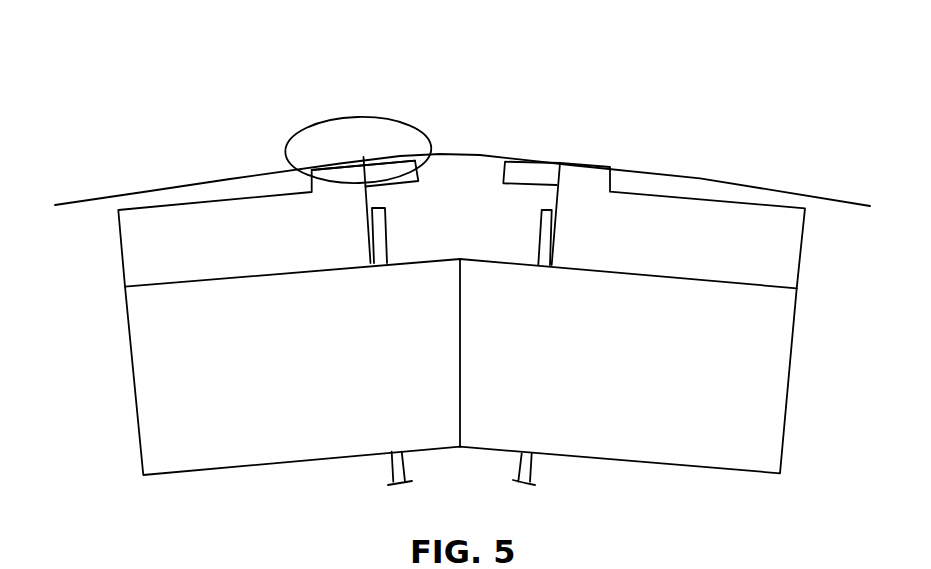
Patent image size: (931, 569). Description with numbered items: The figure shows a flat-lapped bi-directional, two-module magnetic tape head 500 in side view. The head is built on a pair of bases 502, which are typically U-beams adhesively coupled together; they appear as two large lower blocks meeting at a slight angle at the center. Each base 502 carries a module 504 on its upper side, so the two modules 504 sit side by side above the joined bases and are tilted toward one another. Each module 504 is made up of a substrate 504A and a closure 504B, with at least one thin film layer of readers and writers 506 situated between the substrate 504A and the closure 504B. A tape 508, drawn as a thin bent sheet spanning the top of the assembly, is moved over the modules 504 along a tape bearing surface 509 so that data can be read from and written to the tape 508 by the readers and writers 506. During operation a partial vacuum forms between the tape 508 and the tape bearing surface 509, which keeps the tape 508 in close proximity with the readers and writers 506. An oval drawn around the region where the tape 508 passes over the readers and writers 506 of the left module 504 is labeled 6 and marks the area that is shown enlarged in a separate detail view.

The magnetic tape head 500 is at (225, 119).
The base 502 is at (131, 358).
The module 504 is at (122, 255).
The substrate 504A is at (185, 230).
The closure 504B is at (503, 178).
The readers and writers 506 is at (363, 144).
The tape 508 is at (800, 188).
The tape bearing surface 509 is at (585, 144).
The detail region shown in FIG. 6 is at (302, 127).